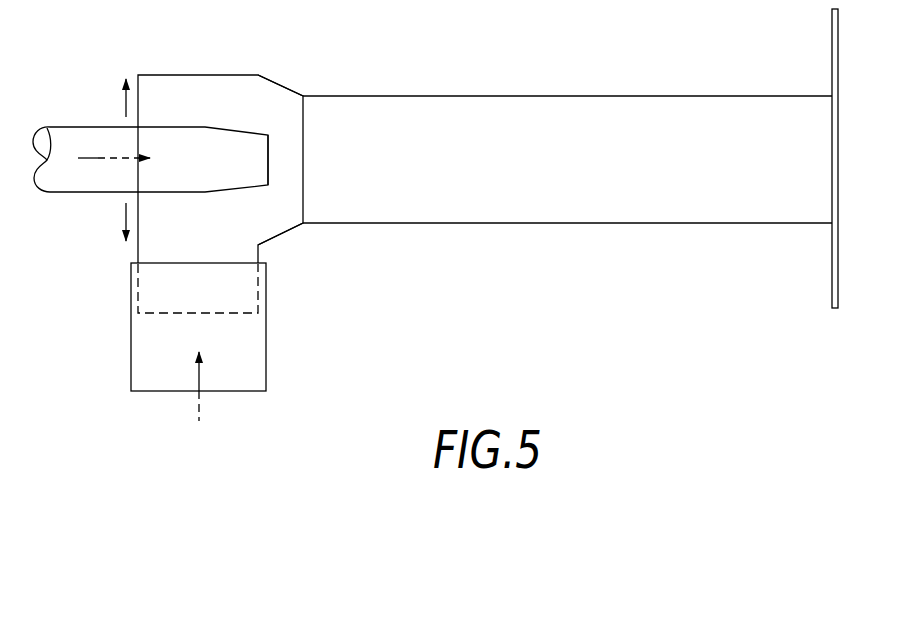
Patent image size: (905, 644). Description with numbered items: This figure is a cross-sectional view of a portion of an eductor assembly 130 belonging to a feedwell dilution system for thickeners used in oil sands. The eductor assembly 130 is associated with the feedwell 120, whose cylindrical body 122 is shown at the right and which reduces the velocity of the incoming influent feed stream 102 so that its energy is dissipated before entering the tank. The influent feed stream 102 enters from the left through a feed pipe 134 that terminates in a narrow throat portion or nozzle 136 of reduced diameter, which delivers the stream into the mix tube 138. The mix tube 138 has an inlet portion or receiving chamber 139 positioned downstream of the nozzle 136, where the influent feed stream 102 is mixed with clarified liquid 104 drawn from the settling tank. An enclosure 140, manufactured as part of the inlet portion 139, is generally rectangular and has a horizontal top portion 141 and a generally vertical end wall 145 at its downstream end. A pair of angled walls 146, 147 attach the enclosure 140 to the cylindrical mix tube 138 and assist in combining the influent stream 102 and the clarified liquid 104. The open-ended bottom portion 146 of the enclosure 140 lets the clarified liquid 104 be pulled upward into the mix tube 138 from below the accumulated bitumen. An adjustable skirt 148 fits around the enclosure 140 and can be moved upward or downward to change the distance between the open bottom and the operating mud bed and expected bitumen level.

The influent feed stream 102 is at (91, 157).
The clarified liquid 104 is at (199, 410).
The feedwell 120 is at (818, 50).
The cylindrical body 122 is at (831, 276).
The eductor assembly 130 is at (496, 280).
The inlet pipe 134 is at (76, 195).
The narrow throat portion 136 is at (278, 177).
The mix tube 138 is at (629, 224).
The inlet portion 139 is at (280, 136).
The enclosure 140 is at (148, 328).
The horizontal top portion 141 is at (189, 74).
The end wall 145 is at (258, 293).
The open-ended bottom portion 146 is at (282, 231).
The angled wall 147 is at (272, 77).
The adjustable skirt 148 is at (267, 353).